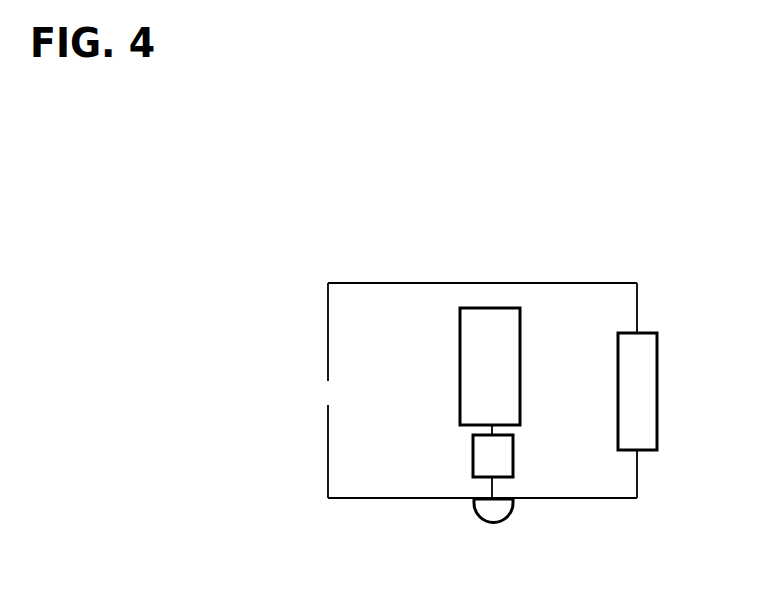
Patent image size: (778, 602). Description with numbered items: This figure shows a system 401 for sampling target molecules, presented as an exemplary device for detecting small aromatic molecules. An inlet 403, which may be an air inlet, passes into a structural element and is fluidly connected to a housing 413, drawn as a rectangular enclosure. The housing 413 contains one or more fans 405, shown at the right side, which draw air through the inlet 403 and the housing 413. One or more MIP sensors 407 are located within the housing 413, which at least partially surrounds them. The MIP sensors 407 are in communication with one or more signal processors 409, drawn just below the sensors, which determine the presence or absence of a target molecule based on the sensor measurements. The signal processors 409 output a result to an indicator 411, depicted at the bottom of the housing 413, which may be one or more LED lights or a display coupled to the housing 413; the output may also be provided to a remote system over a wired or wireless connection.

The system 401 is at (482, 315).
The inlet 403 is at (328, 395).
The fan 405 is at (658, 353).
The MIP sensor 407 is at (459, 325).
The signal processor 409 is at (473, 452).
The indicator 411 is at (500, 525).
The housing 413 is at (545, 282).